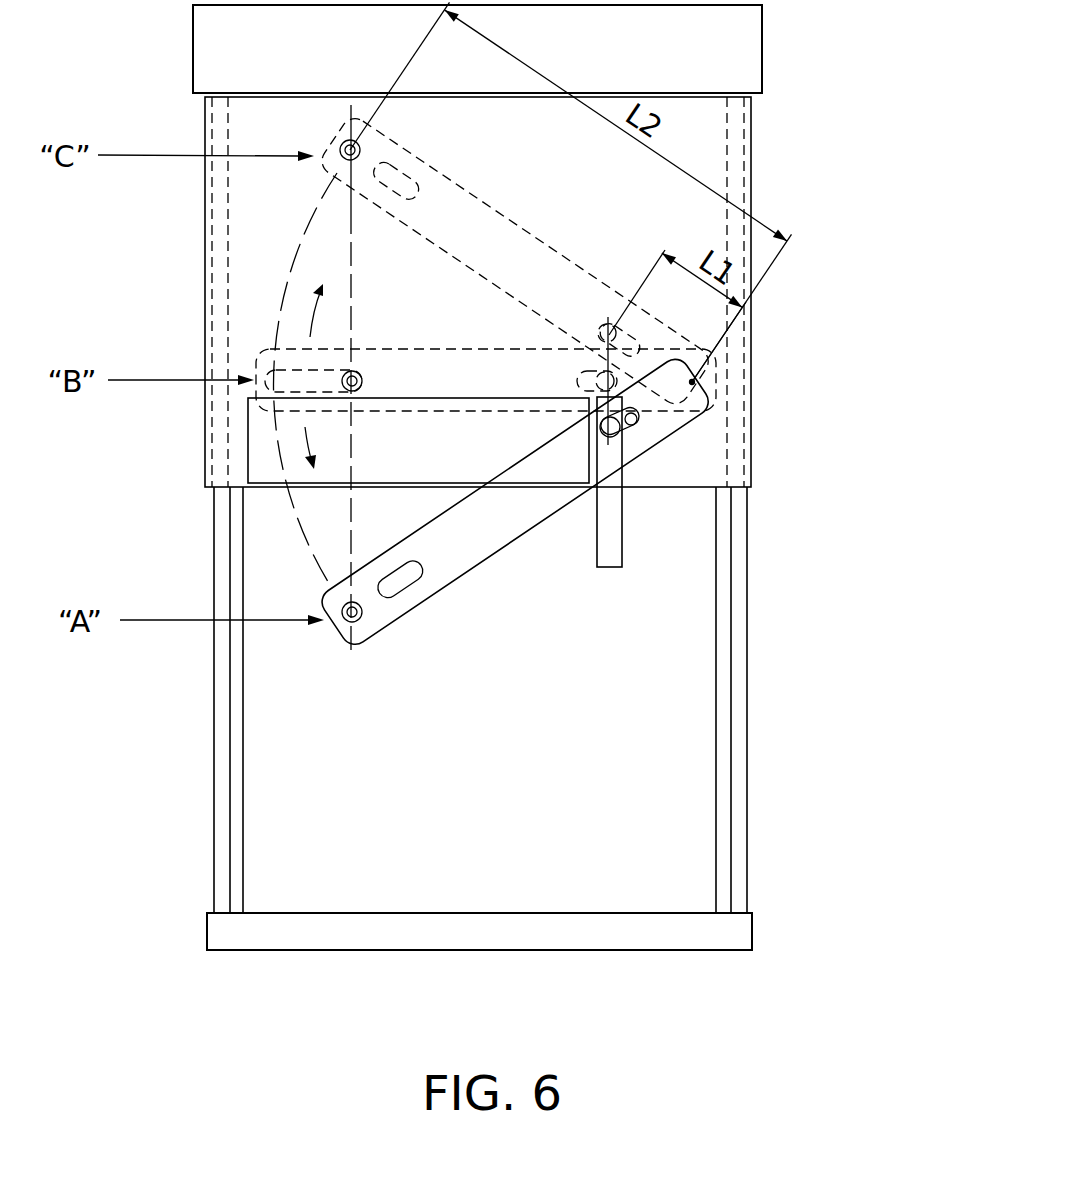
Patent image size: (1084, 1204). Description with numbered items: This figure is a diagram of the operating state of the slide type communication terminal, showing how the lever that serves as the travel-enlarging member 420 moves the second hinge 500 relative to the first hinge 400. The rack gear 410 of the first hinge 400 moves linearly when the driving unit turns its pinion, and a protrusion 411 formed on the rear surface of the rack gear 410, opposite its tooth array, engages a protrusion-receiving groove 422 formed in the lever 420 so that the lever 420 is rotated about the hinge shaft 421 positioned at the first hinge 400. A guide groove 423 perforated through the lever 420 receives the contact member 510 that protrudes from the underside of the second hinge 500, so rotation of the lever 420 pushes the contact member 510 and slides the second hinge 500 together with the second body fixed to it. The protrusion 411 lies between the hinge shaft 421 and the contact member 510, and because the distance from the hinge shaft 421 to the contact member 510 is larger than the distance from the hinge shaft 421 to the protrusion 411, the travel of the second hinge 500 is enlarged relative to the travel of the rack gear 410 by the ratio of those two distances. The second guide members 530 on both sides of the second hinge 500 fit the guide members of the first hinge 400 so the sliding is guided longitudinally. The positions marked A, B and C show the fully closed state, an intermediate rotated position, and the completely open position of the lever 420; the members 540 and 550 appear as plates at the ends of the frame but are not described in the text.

The first hinge 400 is at (751, 320).
The rack gear 410 is at (612, 530).
The protrusion 411 is at (612, 437).
The travel-enlarging member 420 is at (465, 540).
The hinge shaft 421 is at (692, 382).
The protrusion-receiving groove 422 is at (640, 418).
The guide groove 423 is at (393, 585).
The second hinge 500 is at (695, 828).
The contact member 510 is at (343, 601).
The second guide members 530 is at (737, 721).
The upper plate 540 is at (760, 47).
The lower plate 550 is at (742, 929).